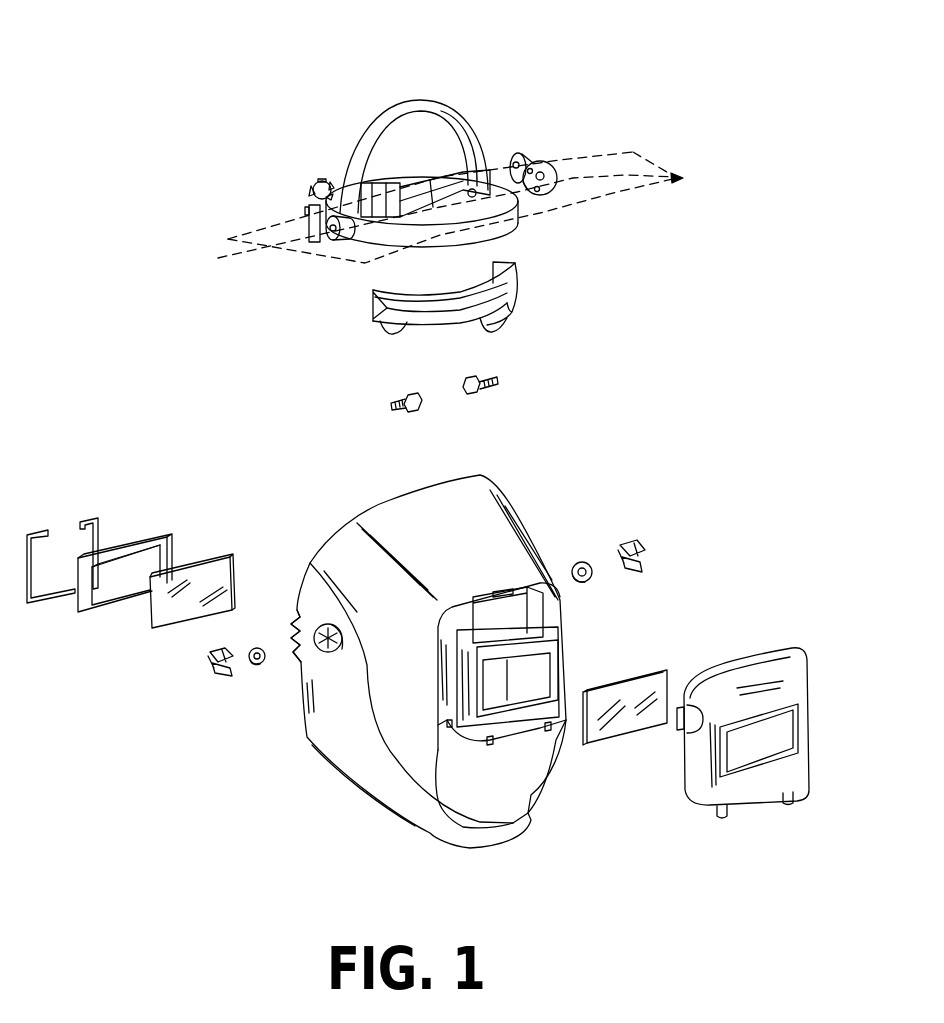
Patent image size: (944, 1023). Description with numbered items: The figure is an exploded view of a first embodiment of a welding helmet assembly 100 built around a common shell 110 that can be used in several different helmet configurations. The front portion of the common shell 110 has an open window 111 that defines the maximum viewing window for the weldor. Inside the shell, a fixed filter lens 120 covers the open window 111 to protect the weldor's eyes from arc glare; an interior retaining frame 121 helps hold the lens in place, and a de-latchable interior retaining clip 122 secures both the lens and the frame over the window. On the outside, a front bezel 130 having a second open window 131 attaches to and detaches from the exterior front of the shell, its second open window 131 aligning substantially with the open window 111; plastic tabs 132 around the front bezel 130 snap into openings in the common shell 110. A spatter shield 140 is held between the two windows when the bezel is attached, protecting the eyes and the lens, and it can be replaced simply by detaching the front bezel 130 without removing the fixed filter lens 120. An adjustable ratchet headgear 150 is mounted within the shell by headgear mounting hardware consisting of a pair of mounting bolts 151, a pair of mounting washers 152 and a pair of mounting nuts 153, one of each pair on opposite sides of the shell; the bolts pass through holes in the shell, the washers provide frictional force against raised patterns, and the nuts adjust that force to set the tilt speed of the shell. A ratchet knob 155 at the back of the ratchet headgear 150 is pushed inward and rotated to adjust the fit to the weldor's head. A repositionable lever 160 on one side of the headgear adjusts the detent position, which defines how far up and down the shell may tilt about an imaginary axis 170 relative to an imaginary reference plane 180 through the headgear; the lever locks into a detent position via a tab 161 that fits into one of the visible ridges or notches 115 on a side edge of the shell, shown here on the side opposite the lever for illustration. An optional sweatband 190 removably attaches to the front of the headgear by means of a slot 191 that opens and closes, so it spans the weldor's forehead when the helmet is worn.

The welding helmet assembly 100 is at (683, 148).
The common shell 110 is at (481, 493).
The open window 111 is at (535, 670).
The visible ridges or notches 115 is at (292, 658).
The fixed filter lens 120 is at (228, 564).
The interior retaining frame 121 is at (160, 534).
The interior retaining clip 122 is at (92, 523).
The front bezel 130 is at (791, 648).
The second open window 131 is at (753, 740).
The plastic tabs 132 is at (788, 803).
The spatter shield 140 is at (643, 672).
The adjustable ratchet headgear 150 is at (393, 107).
The mounting bolts 151 is at (410, 413).
The mounting washers 152 is at (258, 667).
The mounting nuts 153 is at (208, 661).
The ratchet knob 155 is at (311, 186).
The repositionable lever 160 is at (551, 162).
The tab 161 is at (514, 160).
The imaginary axis 170 is at (218, 262).
The imaginary reference plane 180 is at (617, 192).
The sweatband 190 is at (502, 326).
The slot 191 is at (400, 330).